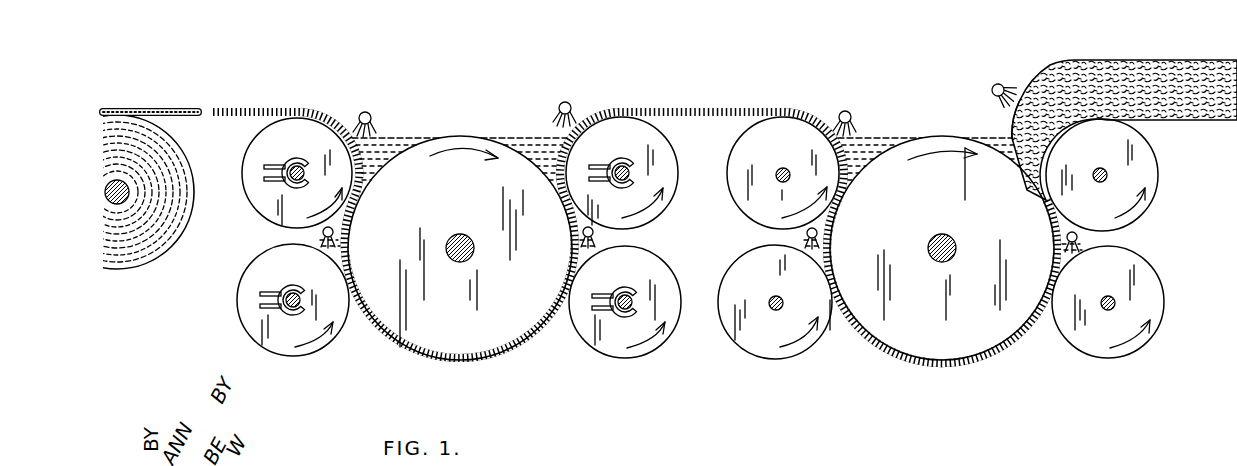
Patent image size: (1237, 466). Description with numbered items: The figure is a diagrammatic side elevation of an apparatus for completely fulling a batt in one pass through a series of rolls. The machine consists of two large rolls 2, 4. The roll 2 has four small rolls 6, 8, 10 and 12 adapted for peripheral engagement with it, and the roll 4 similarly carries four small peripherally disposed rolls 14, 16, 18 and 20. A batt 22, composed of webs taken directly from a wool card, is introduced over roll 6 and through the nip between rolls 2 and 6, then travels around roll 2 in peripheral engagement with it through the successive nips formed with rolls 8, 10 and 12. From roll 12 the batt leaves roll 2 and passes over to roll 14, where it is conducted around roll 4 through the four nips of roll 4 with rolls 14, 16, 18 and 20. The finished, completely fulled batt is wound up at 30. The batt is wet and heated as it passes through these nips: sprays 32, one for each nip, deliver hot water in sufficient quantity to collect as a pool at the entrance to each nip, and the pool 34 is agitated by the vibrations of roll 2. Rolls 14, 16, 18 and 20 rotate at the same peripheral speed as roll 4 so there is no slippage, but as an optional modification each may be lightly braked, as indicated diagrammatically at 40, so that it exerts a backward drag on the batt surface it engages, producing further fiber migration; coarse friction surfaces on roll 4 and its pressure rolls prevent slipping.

The large roll 2 is at (958, 345).
The large roll 4 is at (478, 342).
The peripheral roll 6 is at (1145, 175).
The peripheral roll 8 is at (1118, 350).
The peripheral roll 10 is at (767, 345).
The peripheral roll 12 is at (748, 142).
The pressure roll 14 is at (650, 216).
The pressure roll 16 is at (618, 350).
The pressure roll 18 is at (278, 350).
The pressure roll 20 is at (263, 203).
The batt 22 is at (1155, 65).
The wind-up 30 is at (143, 257).
The sprays 32 is at (368, 113).
The pool 34 is at (1003, 138).
The brake 40 is at (277, 162).